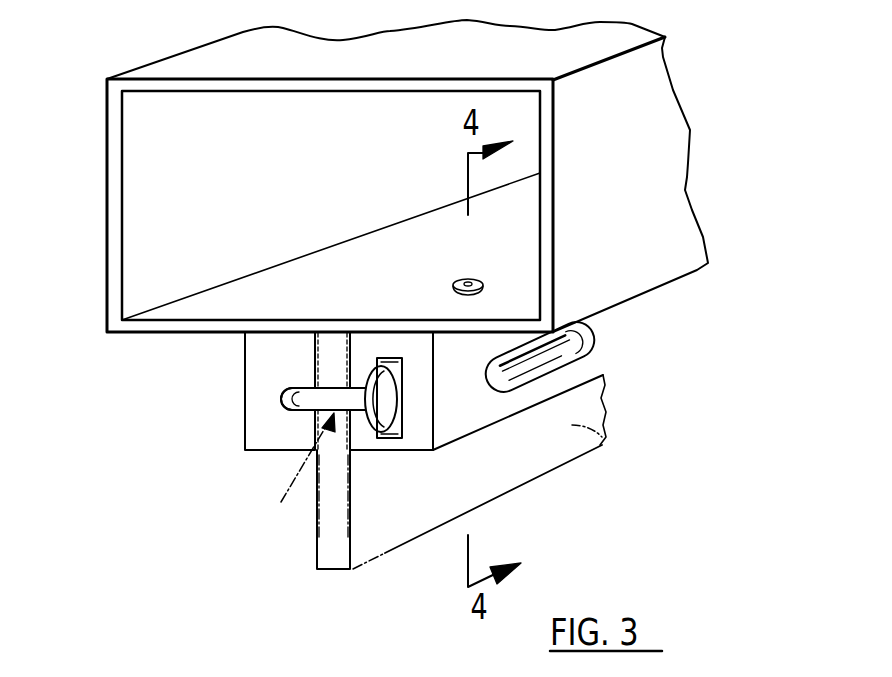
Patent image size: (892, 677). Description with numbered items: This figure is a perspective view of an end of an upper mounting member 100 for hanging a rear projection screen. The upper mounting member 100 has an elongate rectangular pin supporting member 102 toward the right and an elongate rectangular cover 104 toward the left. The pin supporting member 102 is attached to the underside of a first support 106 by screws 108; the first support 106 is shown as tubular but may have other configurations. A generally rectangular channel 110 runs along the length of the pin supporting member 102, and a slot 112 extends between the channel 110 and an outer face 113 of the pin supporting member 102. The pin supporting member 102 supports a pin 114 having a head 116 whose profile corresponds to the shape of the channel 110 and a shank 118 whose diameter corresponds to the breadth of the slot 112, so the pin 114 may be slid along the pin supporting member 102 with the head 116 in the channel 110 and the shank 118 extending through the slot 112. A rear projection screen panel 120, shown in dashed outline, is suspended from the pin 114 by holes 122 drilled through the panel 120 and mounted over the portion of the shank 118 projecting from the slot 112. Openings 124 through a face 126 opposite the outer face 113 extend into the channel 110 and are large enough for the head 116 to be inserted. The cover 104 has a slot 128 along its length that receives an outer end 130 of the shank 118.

The upper mounting member 100 is at (197, 407).
The pin supporting member 102 is at (452, 428).
The cover 104 is at (245, 353).
The first support 106 is at (692, 182).
The screws 108 is at (462, 282).
The channel 110 is at (390, 438).
The slot 112 is at (357, 386).
The outer face 113 is at (343, 455).
The pin 114 is at (302, 411).
The head 116 is at (388, 383).
The shank 118 is at (337, 392).
The rear projection screen panel 120 is at (600, 437).
The holes 122 is at (299, 473).
The openings 124 is at (560, 350).
The face 126 is at (598, 328).
The slot 128 is at (284, 388).
The outer end 130 is at (292, 401).